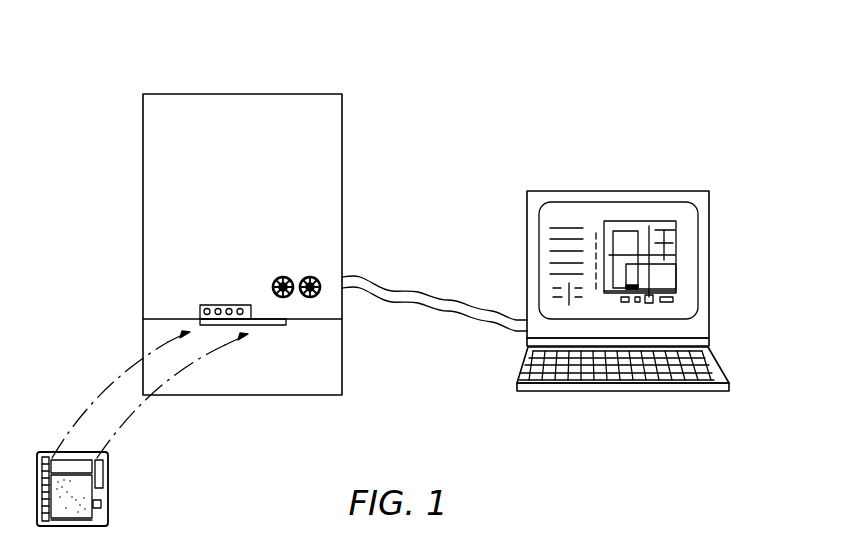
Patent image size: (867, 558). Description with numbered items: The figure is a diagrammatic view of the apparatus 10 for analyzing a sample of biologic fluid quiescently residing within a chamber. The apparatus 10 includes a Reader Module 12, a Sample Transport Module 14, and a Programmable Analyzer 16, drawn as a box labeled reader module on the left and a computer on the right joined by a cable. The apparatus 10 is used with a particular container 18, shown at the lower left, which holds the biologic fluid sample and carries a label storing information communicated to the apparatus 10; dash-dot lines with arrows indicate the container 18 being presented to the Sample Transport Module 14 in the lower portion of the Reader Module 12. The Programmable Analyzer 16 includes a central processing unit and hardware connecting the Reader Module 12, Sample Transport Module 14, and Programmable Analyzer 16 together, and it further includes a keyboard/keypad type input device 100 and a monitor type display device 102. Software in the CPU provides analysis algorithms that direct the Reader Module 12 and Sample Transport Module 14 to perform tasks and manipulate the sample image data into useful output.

The apparatus 10 is at (516, 65).
The reader module 12 is at (250, 236).
The sample transport module 14 is at (302, 376).
The programmable analyzer 16 is at (733, 268).
The container 18 is at (125, 493).
The keyboard/keypad type input device 100 is at (713, 362).
The monitor type display device 102 is at (687, 229).